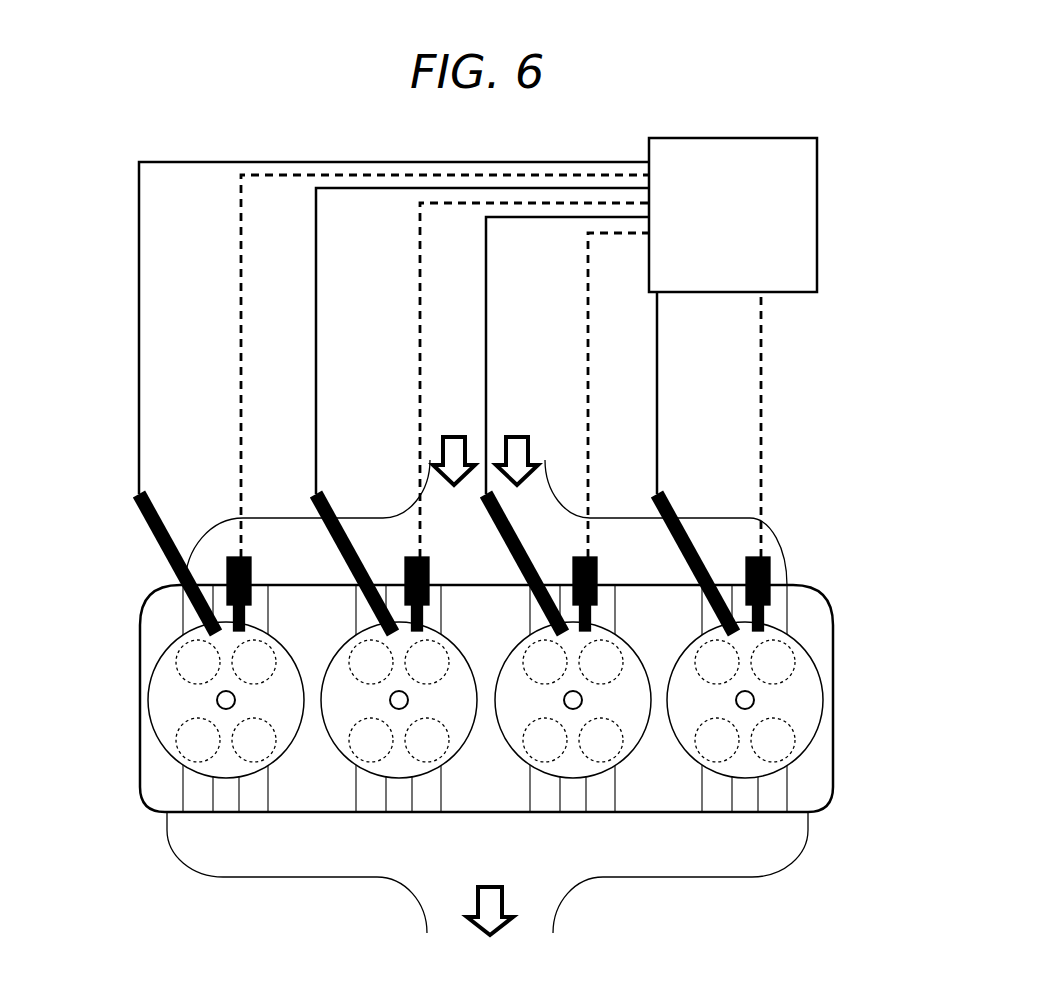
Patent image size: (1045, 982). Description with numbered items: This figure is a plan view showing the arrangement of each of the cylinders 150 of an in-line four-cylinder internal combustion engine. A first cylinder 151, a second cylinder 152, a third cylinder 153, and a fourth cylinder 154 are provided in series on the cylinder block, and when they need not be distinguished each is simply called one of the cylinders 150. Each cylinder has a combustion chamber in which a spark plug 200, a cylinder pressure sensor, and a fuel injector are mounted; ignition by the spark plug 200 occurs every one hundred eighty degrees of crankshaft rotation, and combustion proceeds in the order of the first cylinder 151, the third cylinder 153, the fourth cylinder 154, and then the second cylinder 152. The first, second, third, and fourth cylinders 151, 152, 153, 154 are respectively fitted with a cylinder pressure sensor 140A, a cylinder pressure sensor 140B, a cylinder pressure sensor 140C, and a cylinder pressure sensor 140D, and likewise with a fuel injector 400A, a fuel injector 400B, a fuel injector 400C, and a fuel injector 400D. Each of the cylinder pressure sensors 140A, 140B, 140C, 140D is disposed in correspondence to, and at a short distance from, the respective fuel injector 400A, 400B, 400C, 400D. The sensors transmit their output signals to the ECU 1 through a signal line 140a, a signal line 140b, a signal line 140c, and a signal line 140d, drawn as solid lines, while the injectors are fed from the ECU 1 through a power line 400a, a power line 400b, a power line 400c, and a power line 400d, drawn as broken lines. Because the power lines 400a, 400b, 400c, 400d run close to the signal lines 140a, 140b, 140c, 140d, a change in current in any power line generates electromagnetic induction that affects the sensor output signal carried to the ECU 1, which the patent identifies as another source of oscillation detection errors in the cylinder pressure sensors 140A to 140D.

The ECU 1 is at (733, 215).
The signal line 140a is at (139, 263).
The signal line 140b is at (316, 283).
The signal line 140c is at (486, 297).
The signal line 140d is at (657, 387).
The power line 400a is at (241, 347).
The power line 400b is at (420, 350).
The power line 400c is at (588, 367).
The power line 400d is at (761, 408).
The cylinder pressure sensor 140A is at (152, 502).
The cylinder pressure sensor 140B is at (328, 499).
The cylinder pressure sensor 140C is at (510, 557).
The cylinder pressure sensor 140D is at (683, 555).
The fuel injector 400A is at (252, 565).
The fuel injector 400B is at (405, 563).
The fuel injector 400C is at (573, 565).
The fuel injector 400D is at (747, 563).
The cylinder 150 is at (146, 639).
The first cylinder 151 is at (155, 733).
The second cylinder 152 is at (333, 745).
The third cylinder 153 is at (508, 747).
The fourth cylinder 154 is at (681, 747).
The spark plug 200 is at (233, 693).